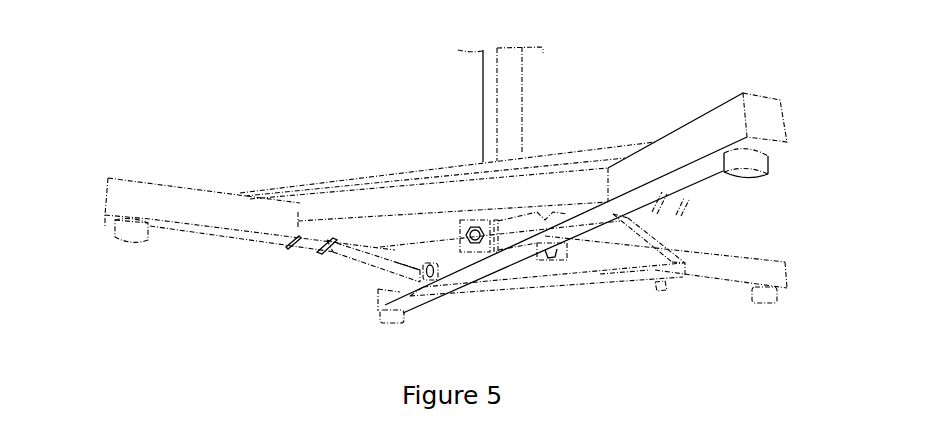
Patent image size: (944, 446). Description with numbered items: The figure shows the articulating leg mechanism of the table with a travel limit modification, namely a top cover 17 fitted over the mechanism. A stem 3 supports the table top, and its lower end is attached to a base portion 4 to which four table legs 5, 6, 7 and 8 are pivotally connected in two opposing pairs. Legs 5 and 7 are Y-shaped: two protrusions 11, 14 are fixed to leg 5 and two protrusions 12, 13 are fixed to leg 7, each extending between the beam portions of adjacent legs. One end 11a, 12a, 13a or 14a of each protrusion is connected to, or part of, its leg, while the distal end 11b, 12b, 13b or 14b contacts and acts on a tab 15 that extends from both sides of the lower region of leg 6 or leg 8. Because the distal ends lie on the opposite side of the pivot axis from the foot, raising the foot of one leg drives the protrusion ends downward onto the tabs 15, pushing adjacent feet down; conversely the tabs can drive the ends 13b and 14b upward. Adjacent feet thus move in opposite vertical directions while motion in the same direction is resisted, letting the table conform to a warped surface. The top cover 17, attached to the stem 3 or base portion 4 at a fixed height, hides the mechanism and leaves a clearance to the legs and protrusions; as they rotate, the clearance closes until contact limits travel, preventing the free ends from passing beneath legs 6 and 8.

The stem 3 is at (487, 92).
The base portion 4 is at (505, 252).
The table leg 5 is at (706, 86).
The table leg 6 is at (753, 244).
The table leg 7 is at (349, 333).
The table leg 8 is at (166, 158).
The protrusion 11 is at (678, 258).
The end of protrusion 11a is at (653, 206).
The distal end of protrusion 11b is at (683, 263).
The protrusion 12 is at (546, 304).
The end of protrusion 12a is at (457, 293).
The distal end of protrusion 12b is at (628, 280).
The protrusion 13 is at (340, 280).
The end of protrusion 13a is at (407, 285).
The distal end of protrusion 13b is at (327, 248).
The protrusion 14 is at (447, 180).
The end of protrusion 14a is at (600, 184).
The distal end of protrusion 14b is at (308, 212).
The tab 15 is at (302, 247).
The top cover 17 is at (385, 177).